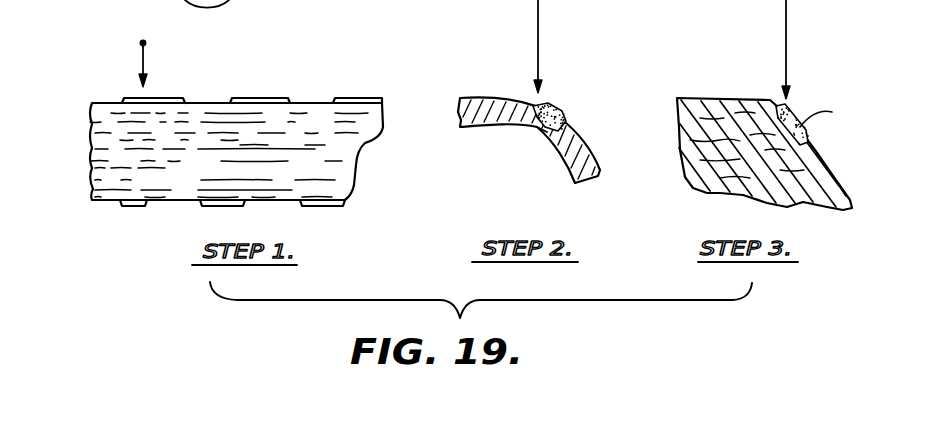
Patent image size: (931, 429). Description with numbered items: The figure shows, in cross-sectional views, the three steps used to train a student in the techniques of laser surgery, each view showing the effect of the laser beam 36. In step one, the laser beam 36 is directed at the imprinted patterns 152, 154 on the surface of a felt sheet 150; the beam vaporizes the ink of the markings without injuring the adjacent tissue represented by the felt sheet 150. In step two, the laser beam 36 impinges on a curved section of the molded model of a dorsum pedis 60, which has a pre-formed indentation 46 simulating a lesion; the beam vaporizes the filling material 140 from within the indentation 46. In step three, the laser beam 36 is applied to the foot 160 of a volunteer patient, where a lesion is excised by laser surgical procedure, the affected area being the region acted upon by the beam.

The laser beam 36 is at (148, 62).
The felt sheet 150 is at (304, 103).
The imprinted pattern 152 is at (268, 95).
The imprinted pattern 154 is at (150, 250).
The model of a dorsum pedis 60 is at (492, 96).
The filling material 140 is at (551, 114).
The indentation 46 is at (544, 131).
The foot 160 is at (743, 75).